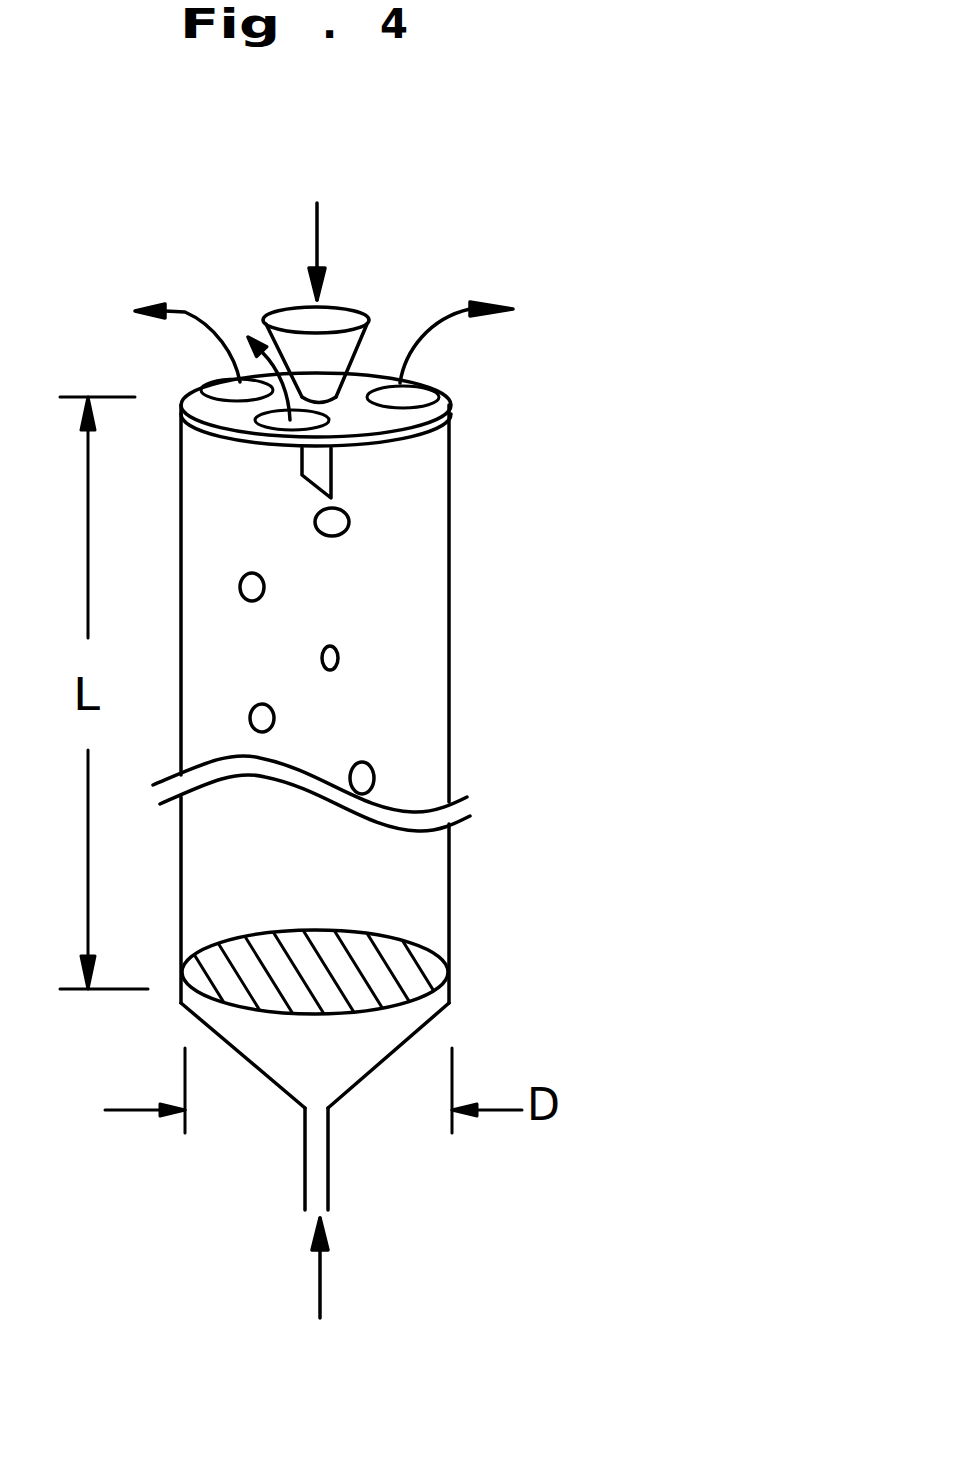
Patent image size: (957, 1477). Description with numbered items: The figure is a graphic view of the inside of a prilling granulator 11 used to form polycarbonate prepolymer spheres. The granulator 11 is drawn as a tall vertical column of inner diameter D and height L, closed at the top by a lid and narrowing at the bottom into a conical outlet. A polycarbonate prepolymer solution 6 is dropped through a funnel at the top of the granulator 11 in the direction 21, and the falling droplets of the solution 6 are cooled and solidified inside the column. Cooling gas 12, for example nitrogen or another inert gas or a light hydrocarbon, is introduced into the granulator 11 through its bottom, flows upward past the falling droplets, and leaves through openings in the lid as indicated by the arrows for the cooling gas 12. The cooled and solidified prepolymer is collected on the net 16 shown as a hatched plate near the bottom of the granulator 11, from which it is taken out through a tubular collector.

The polycarbonate prepolymer solution 6 is at (345, 515).
The prilling granulator 11 is at (449, 685).
The cooling gas 12 is at (186, 306).
The net 16 is at (440, 963).
The direction 21 is at (317, 232).